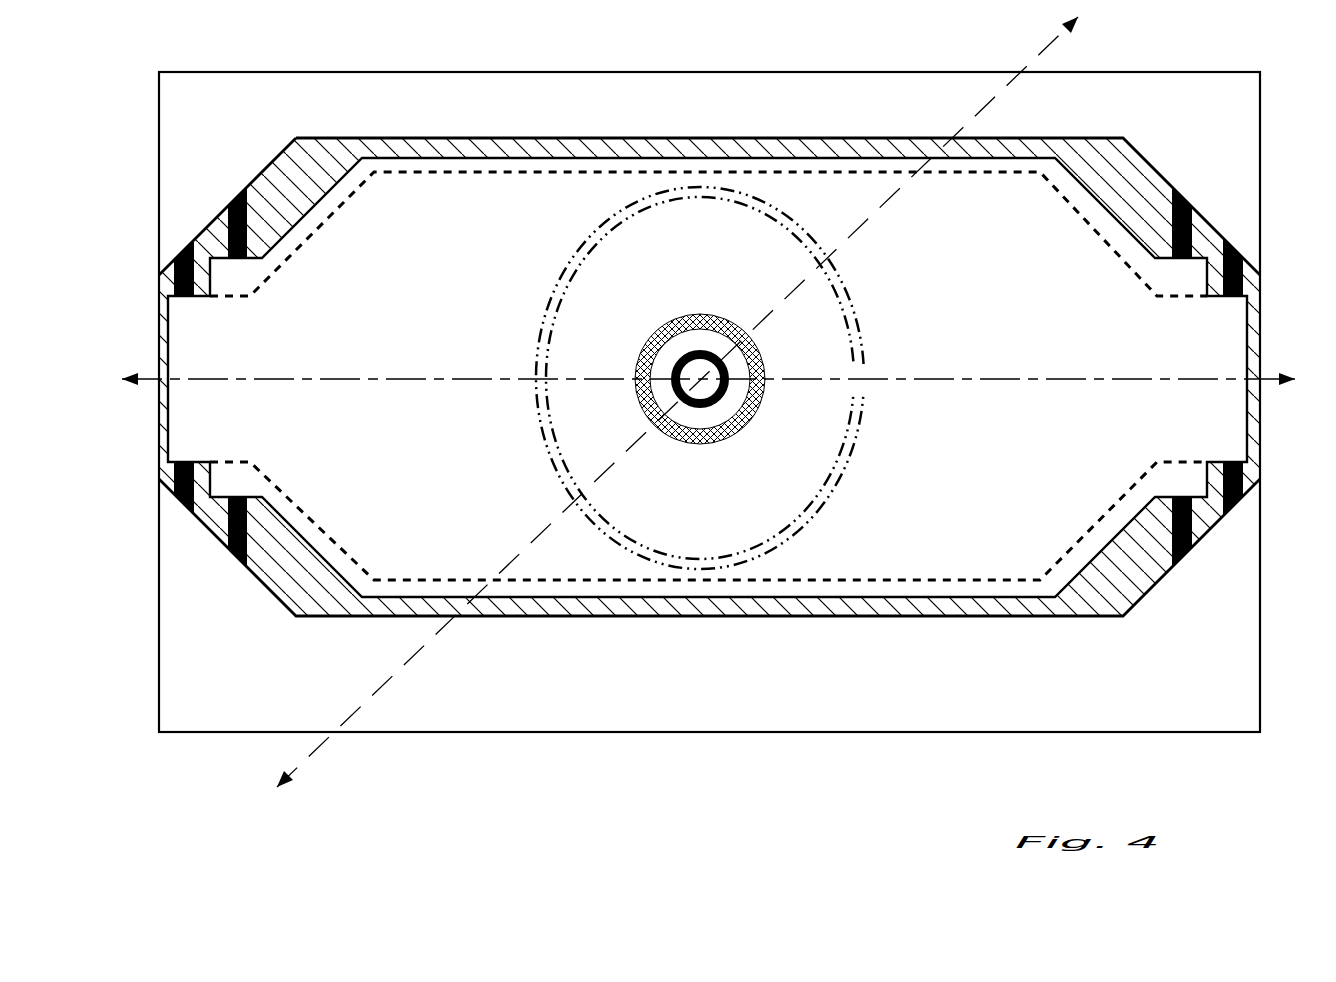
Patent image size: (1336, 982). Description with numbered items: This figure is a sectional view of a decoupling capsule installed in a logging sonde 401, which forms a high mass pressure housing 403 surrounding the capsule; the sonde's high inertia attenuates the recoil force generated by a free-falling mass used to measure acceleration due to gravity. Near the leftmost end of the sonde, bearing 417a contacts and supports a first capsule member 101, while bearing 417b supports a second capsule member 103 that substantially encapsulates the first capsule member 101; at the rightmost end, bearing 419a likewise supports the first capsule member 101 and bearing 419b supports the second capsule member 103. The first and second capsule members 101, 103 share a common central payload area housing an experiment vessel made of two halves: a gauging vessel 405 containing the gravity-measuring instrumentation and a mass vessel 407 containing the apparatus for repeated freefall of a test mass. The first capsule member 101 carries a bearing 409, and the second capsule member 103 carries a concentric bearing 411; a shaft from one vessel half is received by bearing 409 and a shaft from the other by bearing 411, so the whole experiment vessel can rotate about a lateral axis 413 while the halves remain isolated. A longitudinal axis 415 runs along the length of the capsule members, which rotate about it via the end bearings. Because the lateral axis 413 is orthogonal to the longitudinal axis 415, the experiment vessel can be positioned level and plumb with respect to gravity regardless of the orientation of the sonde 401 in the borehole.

The logging sonde 401 is at (506, 72).
The high mass pressure housing 403 is at (368, 90).
The second capsule member 103 is at (303, 217).
The first capsule member 101 is at (298, 246).
The bearing 417a is at (174, 273).
The bearing 417b is at (230, 210).
The bearing 419a is at (1233, 504).
The bearing 419b is at (1182, 553).
The mass vessel 407 is at (562, 290).
The gauging vessel 405 is at (840, 466).
The bearing 409 is at (638, 395).
The bearing 411 is at (674, 360).
The lateral axis 413 is at (316, 750).
The longitudinal axis 415 is at (1112, 379).